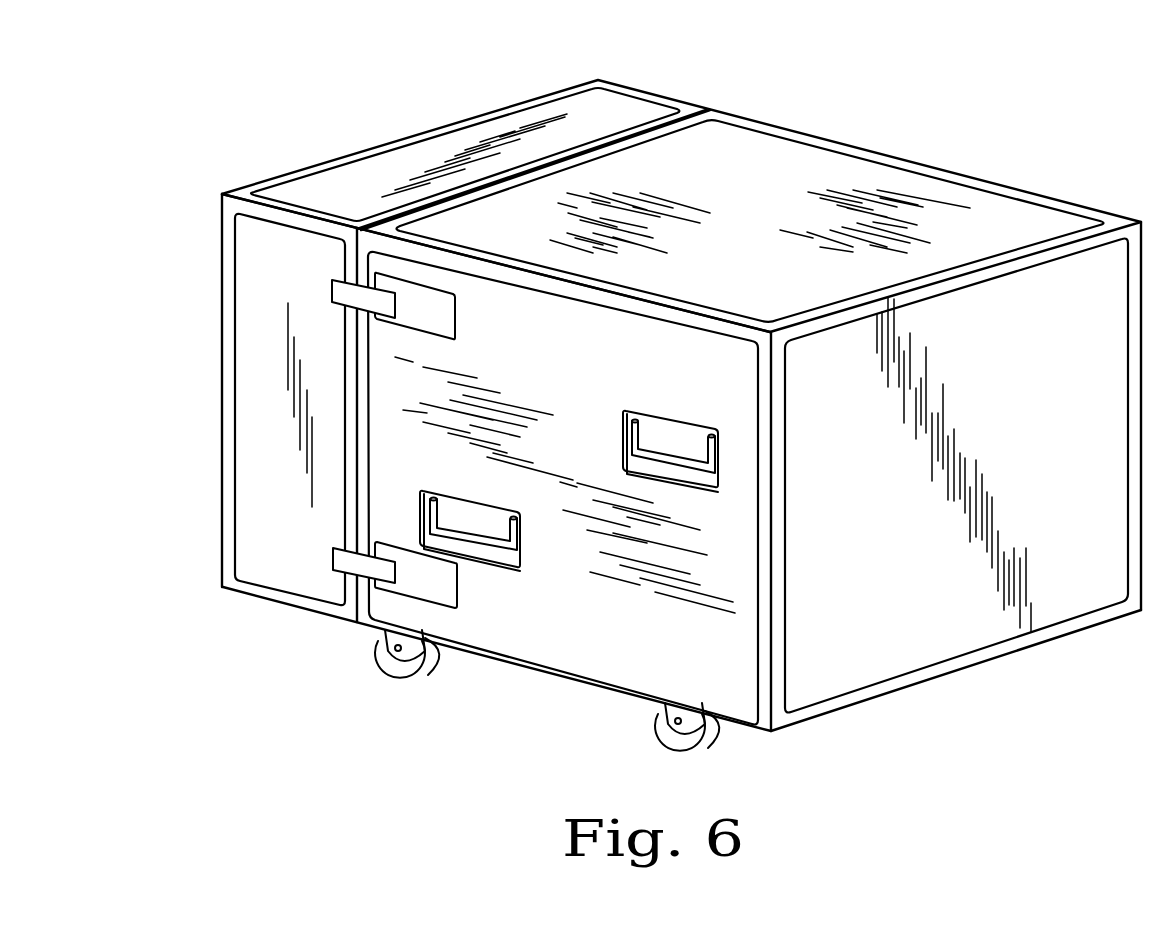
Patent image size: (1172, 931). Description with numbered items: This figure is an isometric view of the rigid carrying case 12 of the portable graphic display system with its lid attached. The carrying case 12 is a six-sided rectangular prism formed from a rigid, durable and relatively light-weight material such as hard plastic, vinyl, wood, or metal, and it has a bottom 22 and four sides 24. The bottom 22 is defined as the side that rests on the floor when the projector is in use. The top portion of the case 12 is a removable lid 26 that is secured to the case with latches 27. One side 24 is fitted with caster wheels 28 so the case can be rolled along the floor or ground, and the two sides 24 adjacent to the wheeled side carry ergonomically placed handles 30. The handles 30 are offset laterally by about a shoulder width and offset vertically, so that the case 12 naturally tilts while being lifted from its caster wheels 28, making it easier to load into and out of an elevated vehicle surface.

The carrying case 12 is at (1012, 121).
The bottom 22 is at (887, 566).
The sides 24 is at (743, 268).
The removable lid 26 is at (260, 363).
The latches 27 is at (332, 290).
The caster wheels 28 is at (390, 662).
The handles 30 is at (633, 442).